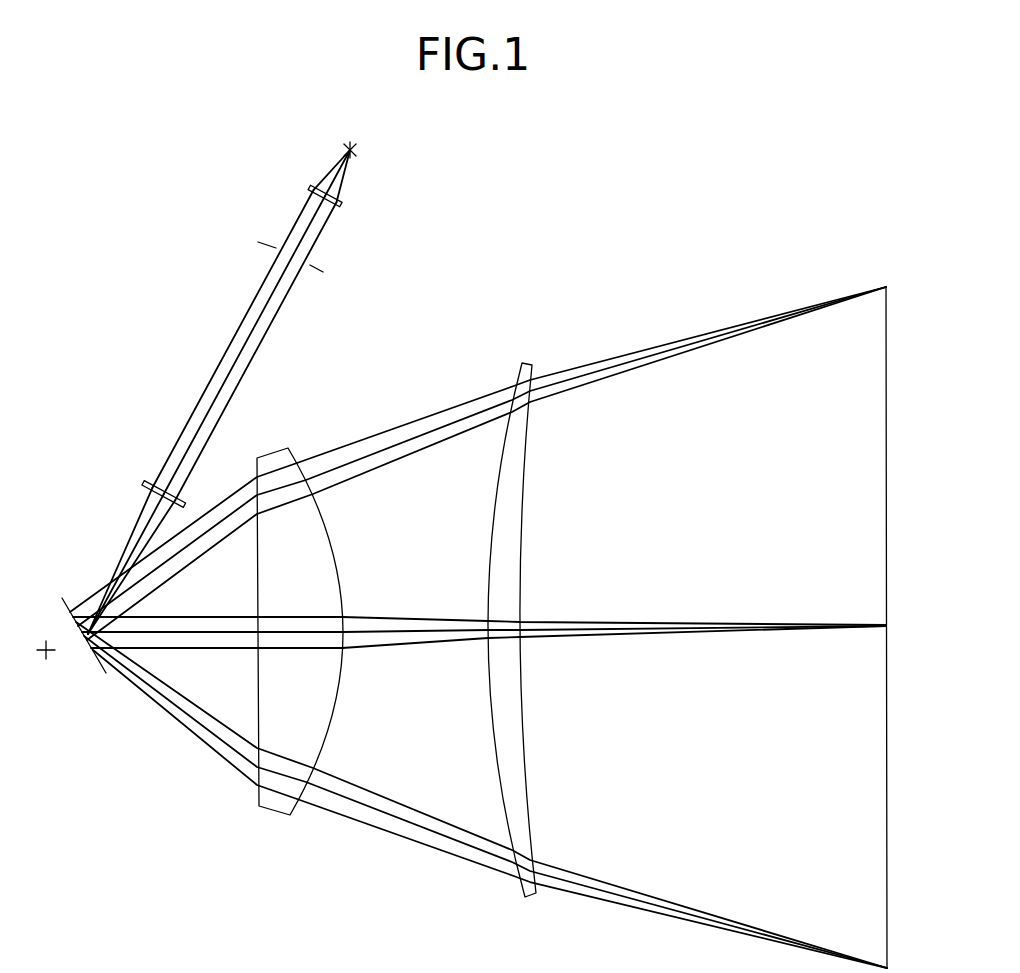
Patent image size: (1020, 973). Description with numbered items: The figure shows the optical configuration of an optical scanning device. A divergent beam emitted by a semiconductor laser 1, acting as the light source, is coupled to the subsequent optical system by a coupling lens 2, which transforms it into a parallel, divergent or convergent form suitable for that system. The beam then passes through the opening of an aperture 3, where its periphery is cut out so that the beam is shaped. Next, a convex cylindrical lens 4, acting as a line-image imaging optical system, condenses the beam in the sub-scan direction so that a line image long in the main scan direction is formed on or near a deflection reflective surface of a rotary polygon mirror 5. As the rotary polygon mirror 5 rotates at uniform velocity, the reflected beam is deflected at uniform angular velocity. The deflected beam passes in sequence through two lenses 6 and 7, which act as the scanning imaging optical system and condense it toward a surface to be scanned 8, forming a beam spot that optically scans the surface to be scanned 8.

The semiconductor laser 1 is at (360, 156).
The coupling lens 2 is at (345, 201).
The aperture 3 is at (322, 268).
The convex cylindrical lens 4 is at (144, 486).
The rotary polygon mirror 5 is at (70, 607).
The lens 6 is at (280, 808).
The lens 7 is at (530, 898).
The surface to be scanned 8 is at (890, 648).